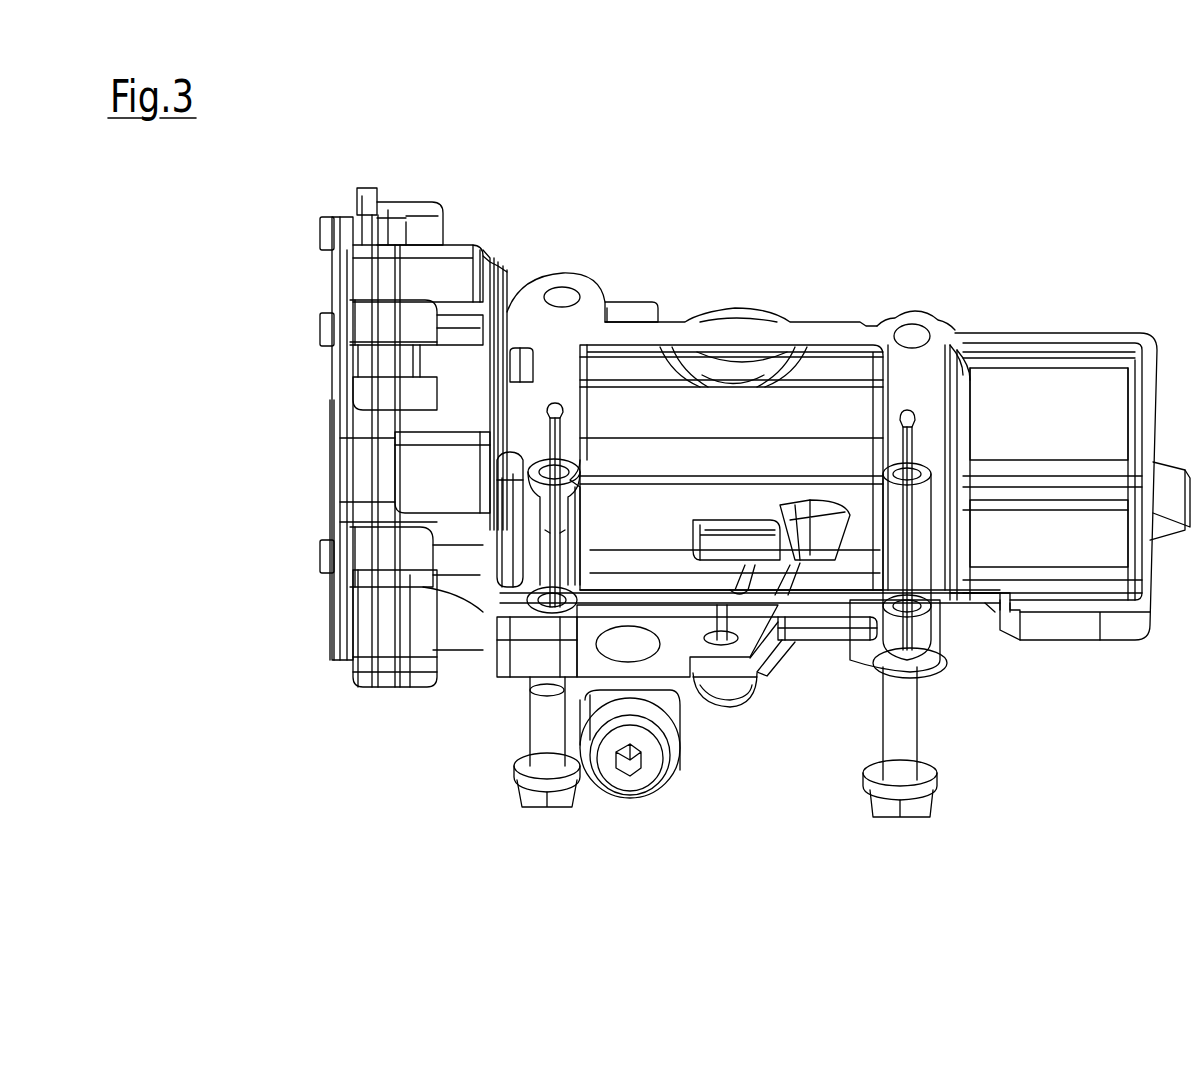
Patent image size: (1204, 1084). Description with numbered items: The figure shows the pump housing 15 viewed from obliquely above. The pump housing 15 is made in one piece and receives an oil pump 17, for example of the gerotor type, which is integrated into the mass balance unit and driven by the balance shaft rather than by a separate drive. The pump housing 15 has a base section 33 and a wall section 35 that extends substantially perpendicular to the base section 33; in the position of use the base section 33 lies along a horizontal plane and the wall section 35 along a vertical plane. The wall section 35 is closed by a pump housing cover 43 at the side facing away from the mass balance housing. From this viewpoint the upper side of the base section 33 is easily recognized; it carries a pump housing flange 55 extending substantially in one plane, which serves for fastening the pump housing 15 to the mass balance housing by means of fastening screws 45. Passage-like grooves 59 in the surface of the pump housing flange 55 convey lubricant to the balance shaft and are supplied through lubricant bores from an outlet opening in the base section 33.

The pump housing 15 is at (827, 192).
The oil pump 17 is at (388, 148).
The base section 33 is at (1021, 272).
The wall section 35 is at (520, 262).
The pump housing cover 43 is at (330, 402).
The fastening screws 45 is at (540, 793).
The pump housing flange 55 is at (607, 268).
The grooves 59 is at (550, 557).